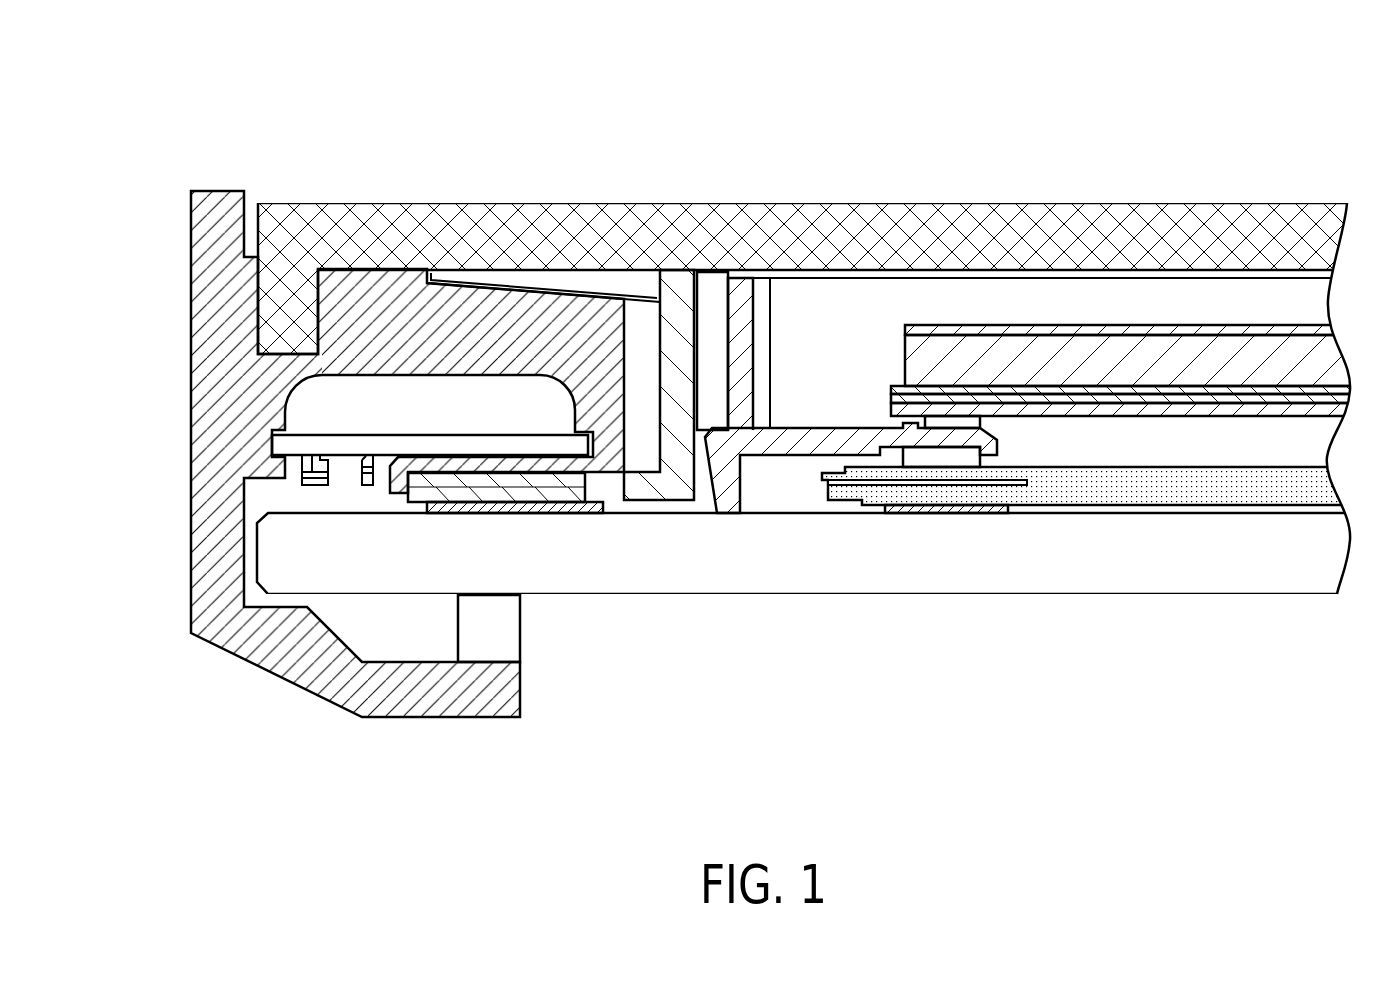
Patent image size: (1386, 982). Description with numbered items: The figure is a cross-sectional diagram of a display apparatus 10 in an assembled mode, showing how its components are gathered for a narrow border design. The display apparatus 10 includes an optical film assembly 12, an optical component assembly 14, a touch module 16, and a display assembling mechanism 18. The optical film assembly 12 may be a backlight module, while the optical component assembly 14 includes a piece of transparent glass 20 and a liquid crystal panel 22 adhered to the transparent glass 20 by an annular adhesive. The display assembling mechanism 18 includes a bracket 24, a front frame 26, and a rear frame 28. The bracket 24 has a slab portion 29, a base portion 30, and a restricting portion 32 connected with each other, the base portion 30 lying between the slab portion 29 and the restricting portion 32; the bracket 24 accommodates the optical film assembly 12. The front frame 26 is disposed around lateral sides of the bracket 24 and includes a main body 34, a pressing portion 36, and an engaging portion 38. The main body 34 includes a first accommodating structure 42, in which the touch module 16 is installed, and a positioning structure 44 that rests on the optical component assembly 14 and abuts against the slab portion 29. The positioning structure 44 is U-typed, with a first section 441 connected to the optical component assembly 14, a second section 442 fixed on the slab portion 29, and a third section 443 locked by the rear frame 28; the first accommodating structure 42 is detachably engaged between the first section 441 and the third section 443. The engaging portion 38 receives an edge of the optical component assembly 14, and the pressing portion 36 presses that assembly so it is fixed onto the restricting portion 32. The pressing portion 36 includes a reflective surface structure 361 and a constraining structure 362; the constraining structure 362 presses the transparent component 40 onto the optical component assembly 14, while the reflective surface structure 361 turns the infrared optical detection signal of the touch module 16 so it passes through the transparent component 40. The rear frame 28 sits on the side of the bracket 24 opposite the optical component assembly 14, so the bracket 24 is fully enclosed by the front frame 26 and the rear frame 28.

The display apparatus 10 is at (1275, 95).
The optical film assembly 12 is at (1255, 355).
The optical component assembly 14 is at (813, 611).
The touch module 16 is at (363, 448).
The display assembling mechanism 18 is at (736, 407).
The transparent glass 20 is at (1030, 565).
The liquid crystal panel 22 is at (1113, 490).
The bracket 24 is at (1033, 268).
The front frame 26 is at (482, 407).
The rear frame 28 is at (1199, 210).
The slab portion 29 is at (1060, 273).
The base portion 30 is at (743, 337).
The restricting portion 32 is at (833, 442).
The main body 34 is at (589, 370).
The pressing portion 36 is at (362, 438).
The engaging portion 38 is at (207, 540).
The transparent component 40 is at (502, 628).
The first accommodating structure 42 is at (554, 335).
The positioning structure 44 is at (644, 370).
The reflective surface structure 361 is at (331, 632).
The constraining structure 362 is at (497, 687).
The first section 441 is at (637, 490).
The second section 442 is at (684, 372).
The third section 443 is at (619, 277).